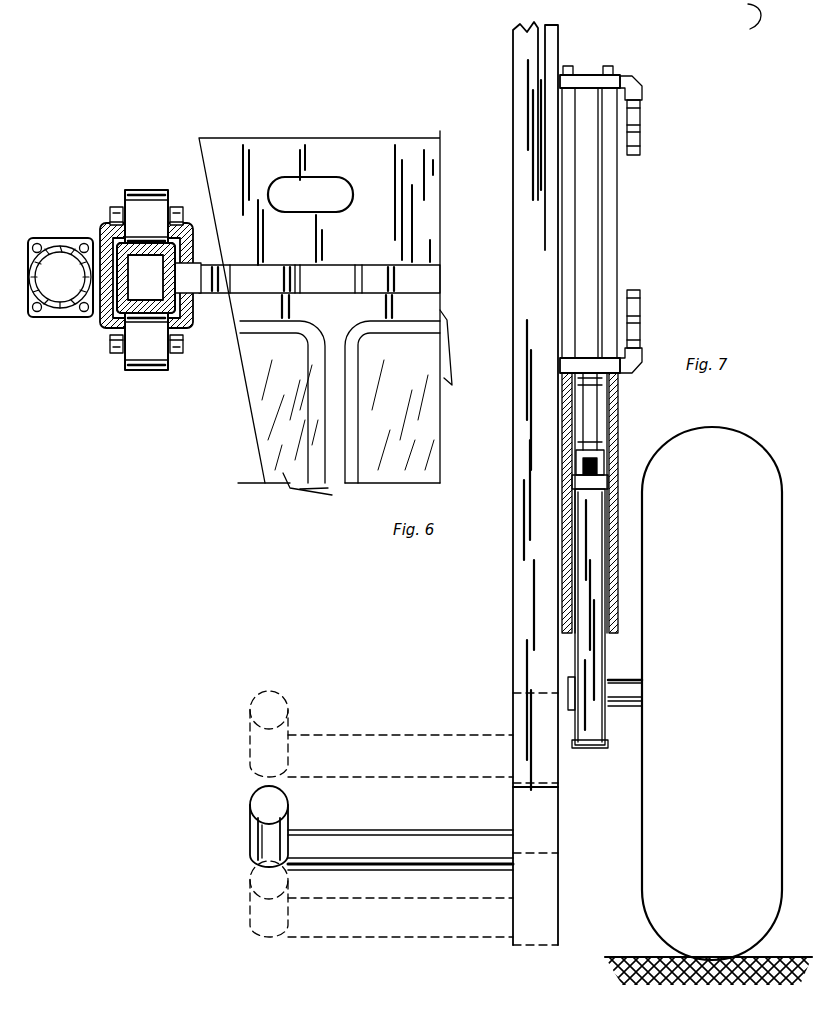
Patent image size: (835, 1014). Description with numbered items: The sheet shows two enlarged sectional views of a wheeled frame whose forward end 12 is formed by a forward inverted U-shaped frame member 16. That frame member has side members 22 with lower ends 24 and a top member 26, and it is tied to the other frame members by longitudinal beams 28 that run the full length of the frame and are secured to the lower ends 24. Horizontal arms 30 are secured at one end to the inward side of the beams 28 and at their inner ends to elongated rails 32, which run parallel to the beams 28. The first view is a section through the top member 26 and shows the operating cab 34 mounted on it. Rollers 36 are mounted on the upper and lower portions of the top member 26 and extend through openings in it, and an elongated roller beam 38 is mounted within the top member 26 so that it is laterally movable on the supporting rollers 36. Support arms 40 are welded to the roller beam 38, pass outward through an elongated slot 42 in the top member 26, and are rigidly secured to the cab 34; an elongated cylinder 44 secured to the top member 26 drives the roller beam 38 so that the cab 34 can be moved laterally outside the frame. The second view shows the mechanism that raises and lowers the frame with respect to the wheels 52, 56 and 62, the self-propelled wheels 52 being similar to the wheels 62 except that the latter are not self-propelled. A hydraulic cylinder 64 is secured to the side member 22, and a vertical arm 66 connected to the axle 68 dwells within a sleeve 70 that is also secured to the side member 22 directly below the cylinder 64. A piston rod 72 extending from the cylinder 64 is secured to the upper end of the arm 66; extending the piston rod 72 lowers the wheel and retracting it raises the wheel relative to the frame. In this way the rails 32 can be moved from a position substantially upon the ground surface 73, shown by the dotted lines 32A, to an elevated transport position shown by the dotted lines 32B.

In FIG. 6, the forward end of frame 12 is at (86, 234).
In FIG. 6, the forward inverted U-shaped frame member 16 is at (104, 250).
In FIG. 7, the side members 22 is at (529, 110).
In FIG. 7, the lower ends 24 is at (526, 668).
In FIG. 6, the top member 26 is at (191, 254).
In FIG. 7, the longitudinal beams 28 is at (522, 808).
In FIG. 7, the arms 30 is at (476, 856).
In FIG. 7, the elongated rails 32 is at (264, 806).
In FIG. 7, the dotted lines showing rails on ground 32A is at (251, 890).
In FIG. 7, the dotted lines showing rails in transport position 32B is at (251, 722).
In FIG. 6, the operating cab 34 is at (328, 138).
In FIG. 6, the rollers 36 is at (140, 192).
In FIG. 6, the roller beam 38 is at (107, 226).
In FIG. 6, the support arms 40 is at (186, 280).
In FIG. 6, the elongated slot 42 is at (173, 264).
In FIG. 6, the cylinder 44 is at (70, 318).
In FIG. 7, the wheels 52 is at (717, 680).
In FIG. 7, the wheels 56 is at (717, 680).
In FIG. 7, the wheels 62 is at (684, 433).
In FIG. 7, the hydraulic cylinders 64 is at (588, 135).
In FIG. 7, the vertical arms 66 is at (577, 513).
In FIG. 7, the axles 68 is at (618, 682).
In FIG. 7, the sleeve 70 is at (616, 413).
In FIG. 7, the piston rod 72 is at (596, 398).
In FIG. 7, the ground surface 73 is at (795, 958).